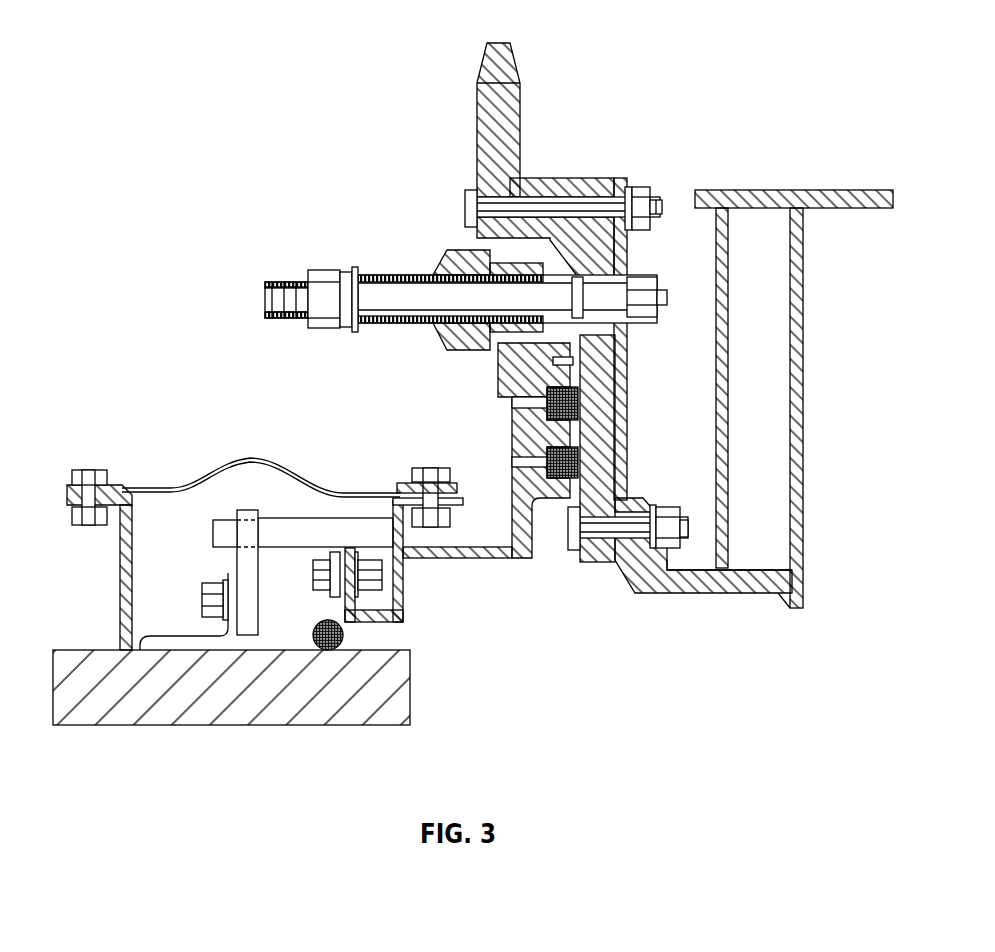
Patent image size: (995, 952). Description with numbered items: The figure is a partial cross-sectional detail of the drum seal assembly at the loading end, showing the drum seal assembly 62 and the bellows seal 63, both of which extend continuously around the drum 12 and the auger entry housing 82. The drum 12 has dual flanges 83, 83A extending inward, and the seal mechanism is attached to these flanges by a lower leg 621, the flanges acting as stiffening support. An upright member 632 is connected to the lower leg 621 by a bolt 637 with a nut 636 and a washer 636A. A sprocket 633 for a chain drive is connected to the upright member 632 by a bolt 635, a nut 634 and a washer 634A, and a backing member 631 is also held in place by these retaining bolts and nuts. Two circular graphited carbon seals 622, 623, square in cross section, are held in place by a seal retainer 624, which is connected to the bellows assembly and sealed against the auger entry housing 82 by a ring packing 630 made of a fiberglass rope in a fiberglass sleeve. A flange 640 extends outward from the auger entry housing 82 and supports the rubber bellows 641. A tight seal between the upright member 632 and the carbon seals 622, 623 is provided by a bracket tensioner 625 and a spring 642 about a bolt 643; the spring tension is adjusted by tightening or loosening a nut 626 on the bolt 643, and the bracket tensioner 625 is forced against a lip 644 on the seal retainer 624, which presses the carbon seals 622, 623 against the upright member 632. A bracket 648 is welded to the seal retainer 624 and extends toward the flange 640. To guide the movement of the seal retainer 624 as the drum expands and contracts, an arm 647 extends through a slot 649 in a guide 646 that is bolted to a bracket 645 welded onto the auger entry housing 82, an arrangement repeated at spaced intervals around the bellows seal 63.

The drum 12 is at (818, 190).
The flange 83 is at (716, 290).
The flange 83A is at (804, 290).
The drum seal assembly 62 is at (660, 110).
The upright member 632 is at (530, 178).
The sprocket 633 is at (477, 135).
The bolt 635 is at (466, 205).
The washer 634A is at (628, 186).
The nut 634 is at (645, 188).
The bracket tensioner 625 is at (440, 252).
The spring 642 is at (382, 275).
The bolt 643 is at (267, 300).
The nut 626 is at (353, 267).
The lip 644 is at (510, 353).
The seal retainer 624 is at (512, 410).
The graphited carbon seal 622 is at (580, 406).
The graphited carbon seal 623 is at (580, 464).
The backing member 631 is at (628, 372).
The lower leg 621 is at (700, 593).
The washer 636A is at (670, 560).
The bolt 637 is at (565, 552).
The nut 636 is at (668, 508).
The auger entry housing 82 is at (70, 650).
The bellows seal 63 is at (205, 438).
The flange 640 is at (120, 555).
The rubber bellows 641 is at (275, 455).
The arm 647 is at (325, 518).
The slot 649 is at (215, 530).
The bracket 645 is at (192, 630).
The bracket 648 is at (480, 560).
The guide 646 is at (262, 625).
The ring packing 630 is at (345, 640).